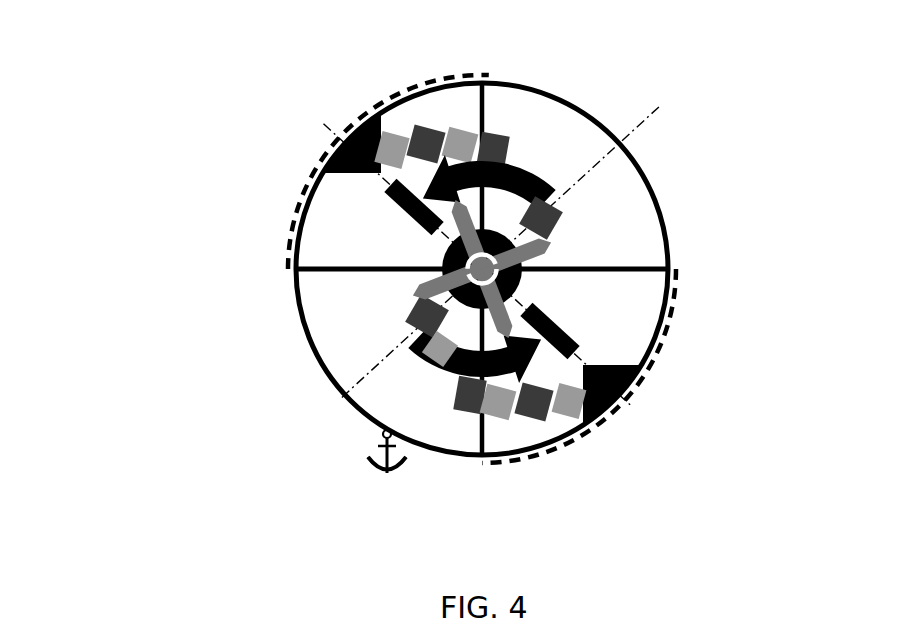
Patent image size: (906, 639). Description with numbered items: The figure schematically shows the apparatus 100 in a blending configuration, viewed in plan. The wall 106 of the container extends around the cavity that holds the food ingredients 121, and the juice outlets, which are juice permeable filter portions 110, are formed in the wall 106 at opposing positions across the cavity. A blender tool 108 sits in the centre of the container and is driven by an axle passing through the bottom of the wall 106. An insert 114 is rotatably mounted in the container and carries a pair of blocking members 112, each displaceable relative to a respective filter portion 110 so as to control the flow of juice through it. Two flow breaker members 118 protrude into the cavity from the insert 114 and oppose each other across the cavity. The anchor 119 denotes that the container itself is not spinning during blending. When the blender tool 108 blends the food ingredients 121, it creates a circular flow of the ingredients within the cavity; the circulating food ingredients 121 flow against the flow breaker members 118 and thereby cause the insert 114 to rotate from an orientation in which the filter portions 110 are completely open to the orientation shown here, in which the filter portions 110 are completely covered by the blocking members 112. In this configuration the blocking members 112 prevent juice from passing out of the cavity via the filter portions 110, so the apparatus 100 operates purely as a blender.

The apparatus 100 is at (152, 124).
The wall 106 is at (655, 192).
The blender tool 108 is at (537, 257).
The juice outlet 110 is at (391, 100).
The blocking member 112 is at (314, 218).
The insert 114 is at (458, 113).
The flow breaker member 118 is at (334, 156).
The anchor 119 is at (377, 445).
The food ingredients 121 is at (390, 148).